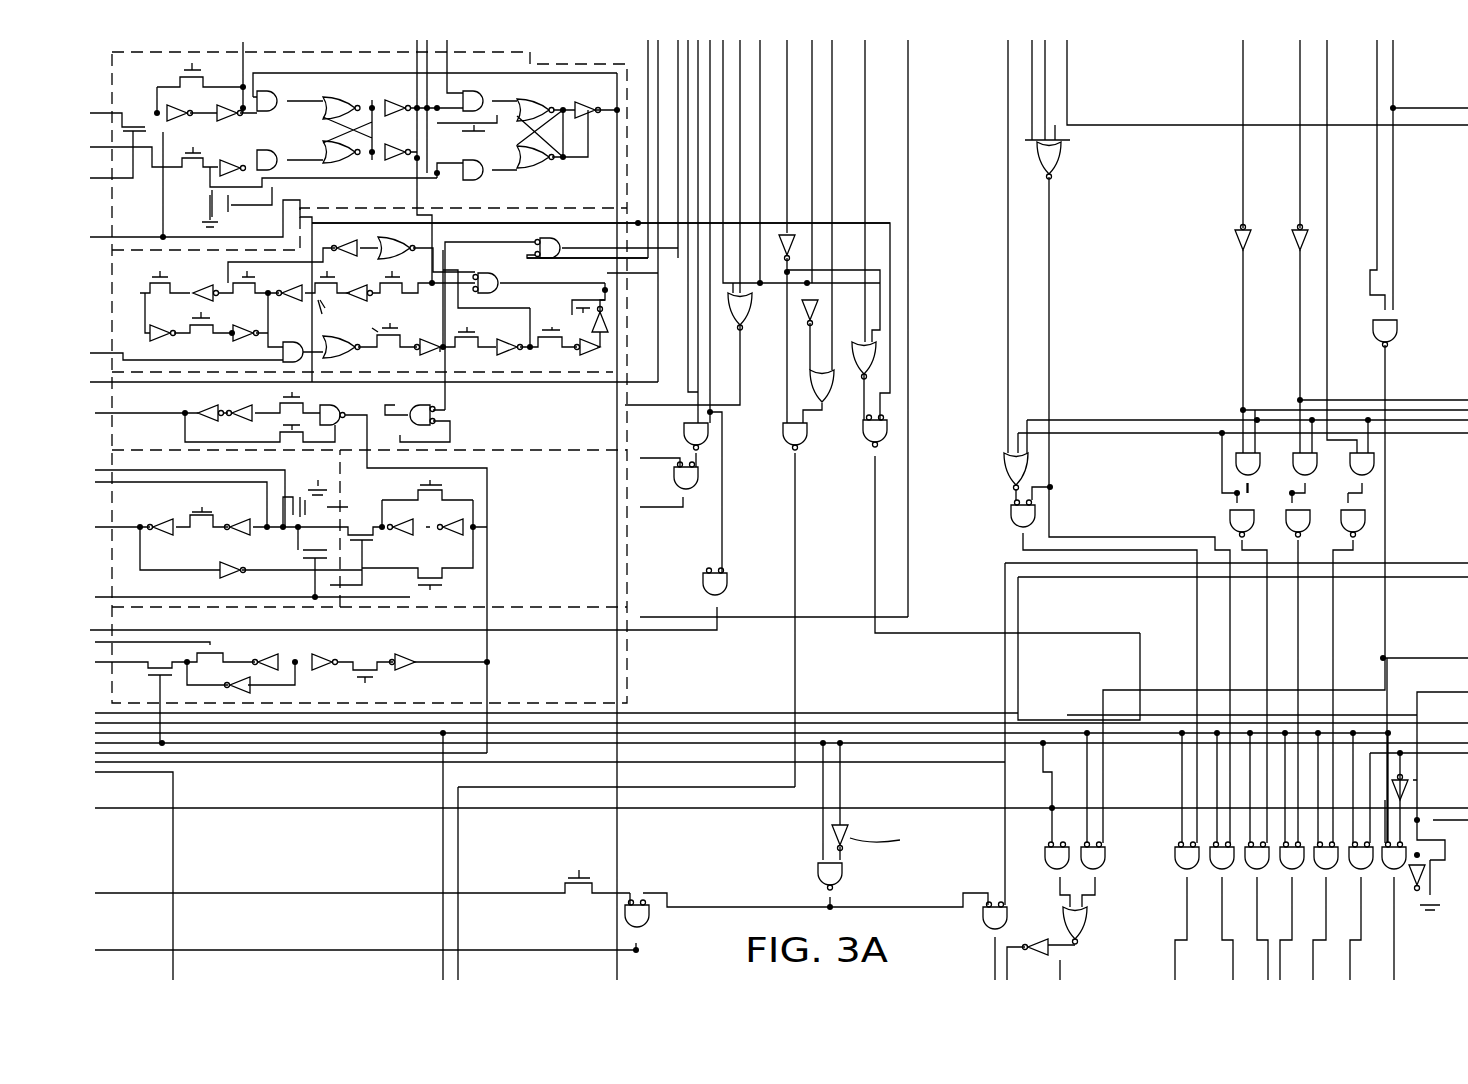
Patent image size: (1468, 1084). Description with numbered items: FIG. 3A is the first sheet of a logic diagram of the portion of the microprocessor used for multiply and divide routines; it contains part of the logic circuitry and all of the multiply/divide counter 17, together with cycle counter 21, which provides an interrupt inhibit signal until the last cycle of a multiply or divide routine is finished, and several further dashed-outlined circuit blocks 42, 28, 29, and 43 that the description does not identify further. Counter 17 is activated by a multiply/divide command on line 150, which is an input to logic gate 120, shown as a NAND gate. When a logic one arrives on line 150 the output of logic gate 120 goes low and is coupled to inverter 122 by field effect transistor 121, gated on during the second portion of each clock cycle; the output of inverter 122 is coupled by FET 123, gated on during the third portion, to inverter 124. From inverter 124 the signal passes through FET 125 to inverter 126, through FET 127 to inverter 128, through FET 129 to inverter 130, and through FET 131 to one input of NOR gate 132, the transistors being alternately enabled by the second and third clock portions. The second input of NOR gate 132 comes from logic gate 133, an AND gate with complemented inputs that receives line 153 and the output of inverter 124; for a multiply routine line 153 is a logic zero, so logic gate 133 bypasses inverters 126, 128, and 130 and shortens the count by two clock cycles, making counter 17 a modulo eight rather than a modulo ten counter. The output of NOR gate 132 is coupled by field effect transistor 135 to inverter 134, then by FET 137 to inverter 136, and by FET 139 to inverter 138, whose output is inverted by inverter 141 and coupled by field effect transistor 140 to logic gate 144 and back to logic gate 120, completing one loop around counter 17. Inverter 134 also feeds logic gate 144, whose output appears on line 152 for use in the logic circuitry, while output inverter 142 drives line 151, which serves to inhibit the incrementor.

The line 150 is at (648, 50).
The line 151 is at (890, 223).
The line 152 is at (598, 245).
The logic gate 144 is at (548, 238).
The output inverter 142 is at (358, 237).
The FET 125 is at (225, 253).
The inverter 126 is at (213, 285).
The inverter 124 is at (278, 293).
The inverter 122 is at (370, 290).
The logic gate 120 is at (503, 270).
The field effect transistor 121 is at (400, 290).
The FET 127 is at (160, 300).
The FET 129 is at (210, 318).
The FET 123 is at (334, 313).
The FET 131 is at (322, 314).
The field effect transistor 135 is at (372, 328).
The inverter 134 is at (428, 340).
The inverter 136 is at (520, 342).
The field effect transistor 140 is at (572, 315).
The inverter 141 is at (612, 322).
The line 153 is at (183, 360).
The NOR gate 132 is at (352, 350).
The FET 137 is at (440, 352).
The FET 139 is at (532, 352).
The inverter 138 is at (593, 357).
The inverter 128 is at (215, 335).
The inverter 130 is at (255, 340).
The logic gate 133 is at (300, 365).
The control circuit block 42 is at (147, 215).
The multiply/divide counter 17 is at (140, 286).
The cycle counter 21 is at (145, 407).
The latch circuit block 28 is at (204, 565).
The latch circuit block 29 is at (558, 560).
The buffer circuit block 43 is at (556, 682).